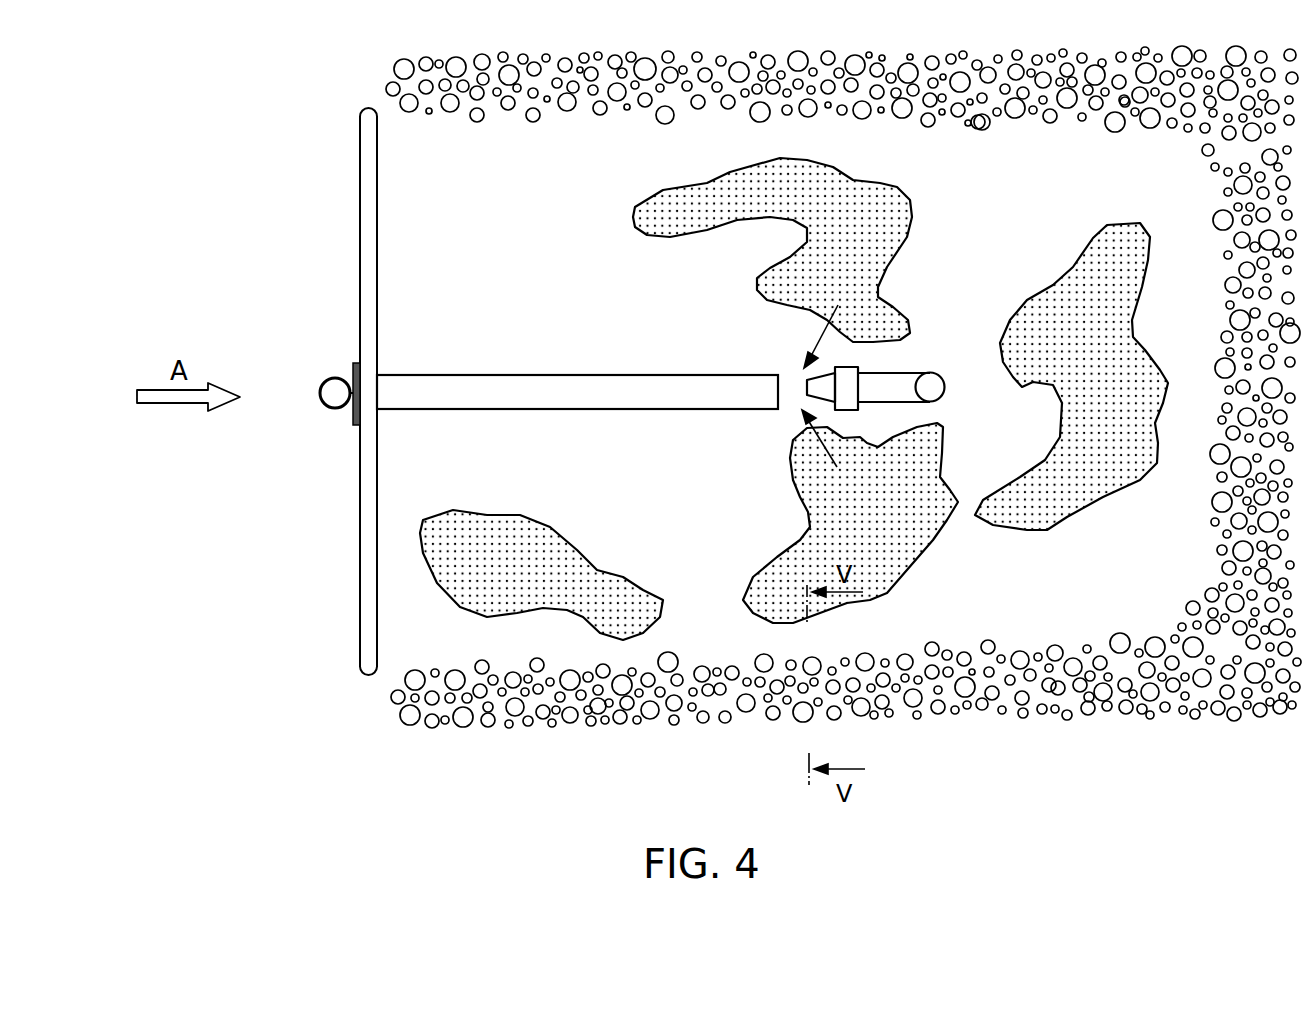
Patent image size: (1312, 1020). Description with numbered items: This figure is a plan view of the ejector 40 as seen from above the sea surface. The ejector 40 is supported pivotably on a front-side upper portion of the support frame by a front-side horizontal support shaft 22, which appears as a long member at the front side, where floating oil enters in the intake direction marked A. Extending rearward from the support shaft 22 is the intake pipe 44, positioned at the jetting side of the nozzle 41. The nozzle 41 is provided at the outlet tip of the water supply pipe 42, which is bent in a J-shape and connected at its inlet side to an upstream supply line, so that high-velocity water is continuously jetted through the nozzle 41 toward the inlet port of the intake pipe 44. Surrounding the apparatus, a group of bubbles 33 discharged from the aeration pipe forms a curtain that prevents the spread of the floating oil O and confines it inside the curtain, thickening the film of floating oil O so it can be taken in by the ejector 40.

The front-side horizontal support shaft 22 is at (378, 202).
The group of bubbles 33 is at (1098, 690).
The ejector 40 is at (330, 345).
The nozzle 41 is at (823, 347).
The water supply pipe 42 is at (901, 372).
The intake pipe 44 is at (523, 375).
The floating oil O is at (790, 489).